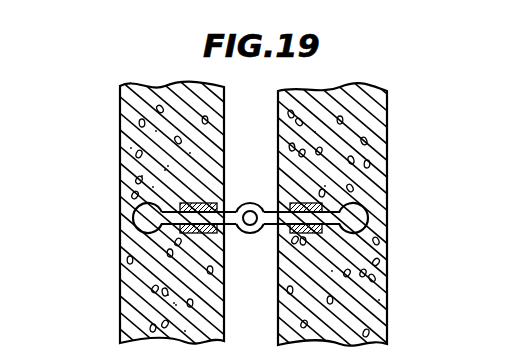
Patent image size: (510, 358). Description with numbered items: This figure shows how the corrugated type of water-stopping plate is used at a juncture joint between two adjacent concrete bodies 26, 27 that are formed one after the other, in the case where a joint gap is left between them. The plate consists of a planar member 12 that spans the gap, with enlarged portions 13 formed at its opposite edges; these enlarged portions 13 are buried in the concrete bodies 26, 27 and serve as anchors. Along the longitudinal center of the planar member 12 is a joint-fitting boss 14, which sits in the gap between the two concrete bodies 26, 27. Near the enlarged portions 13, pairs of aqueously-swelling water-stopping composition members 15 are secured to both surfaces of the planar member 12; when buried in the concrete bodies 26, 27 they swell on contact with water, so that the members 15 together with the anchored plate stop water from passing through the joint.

The planar member 12 is at (262, 233).
The enlarged portions 13 is at (362, 216).
The joint-fitting boss 14 is at (250, 203).
The aqueously-swelling water-stopping composition members 15 is at (296, 205).
The concrete body 26 is at (122, 307).
The concrete body 27 is at (378, 312).